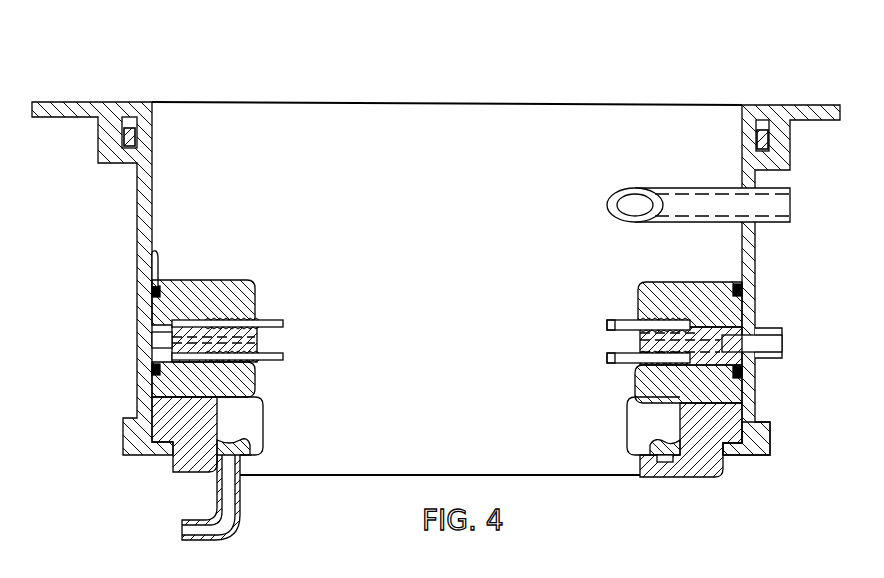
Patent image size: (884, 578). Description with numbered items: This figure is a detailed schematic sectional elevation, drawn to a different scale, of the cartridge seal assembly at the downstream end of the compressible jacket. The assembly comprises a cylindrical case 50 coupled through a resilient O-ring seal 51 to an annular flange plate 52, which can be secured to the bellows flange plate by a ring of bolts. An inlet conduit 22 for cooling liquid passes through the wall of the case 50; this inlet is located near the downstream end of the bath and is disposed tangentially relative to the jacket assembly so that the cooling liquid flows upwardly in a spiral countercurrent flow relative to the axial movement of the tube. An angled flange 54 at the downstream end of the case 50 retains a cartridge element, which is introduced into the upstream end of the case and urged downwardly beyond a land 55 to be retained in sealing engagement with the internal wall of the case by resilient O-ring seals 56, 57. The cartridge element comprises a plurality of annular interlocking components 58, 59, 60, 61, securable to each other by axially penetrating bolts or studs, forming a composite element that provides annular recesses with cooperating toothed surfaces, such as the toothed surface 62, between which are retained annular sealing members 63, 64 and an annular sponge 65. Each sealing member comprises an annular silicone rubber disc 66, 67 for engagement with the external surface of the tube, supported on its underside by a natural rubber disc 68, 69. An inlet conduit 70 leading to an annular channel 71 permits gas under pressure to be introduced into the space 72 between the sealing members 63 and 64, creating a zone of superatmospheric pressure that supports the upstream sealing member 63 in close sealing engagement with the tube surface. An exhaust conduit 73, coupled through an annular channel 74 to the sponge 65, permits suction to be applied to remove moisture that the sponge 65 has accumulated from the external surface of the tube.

The inlet conduit 22 is at (787, 205).
The cylindrical case 50 is at (143, 190).
The resilient O-ring seal 51 is at (760, 135).
The annular flange plate 52 is at (817, 105).
The angled flange 54 is at (763, 455).
The land 55 is at (153, 254).
The resilient O-ring seal 56 is at (738, 293).
The resilient O-ring seal 57 is at (738, 372).
The annular interlocking component 58 is at (245, 300).
The annular interlocking component 59 is at (165, 327).
The annular interlocking component 60 is at (255, 385).
The annular interlocking component 61 is at (170, 415).
The toothed surface 62 is at (640, 300).
The annular sealing member 63 is at (601, 325).
The annular sealing member 64 is at (601, 363).
The annular sponge 65 is at (640, 420).
The silicone rubber disc 66 is at (612, 322).
The silicone rubber disc 67 is at (615, 350).
The natural rubber disc 68 is at (613, 341).
The natural rubber disc 69 is at (612, 365).
The inlet conduit 70 is at (783, 352).
The annular channel 71 is at (160, 340).
The space 72 is at (268, 343).
The exhaust conduit 73 is at (238, 513).
The annular channel 74 is at (668, 462).